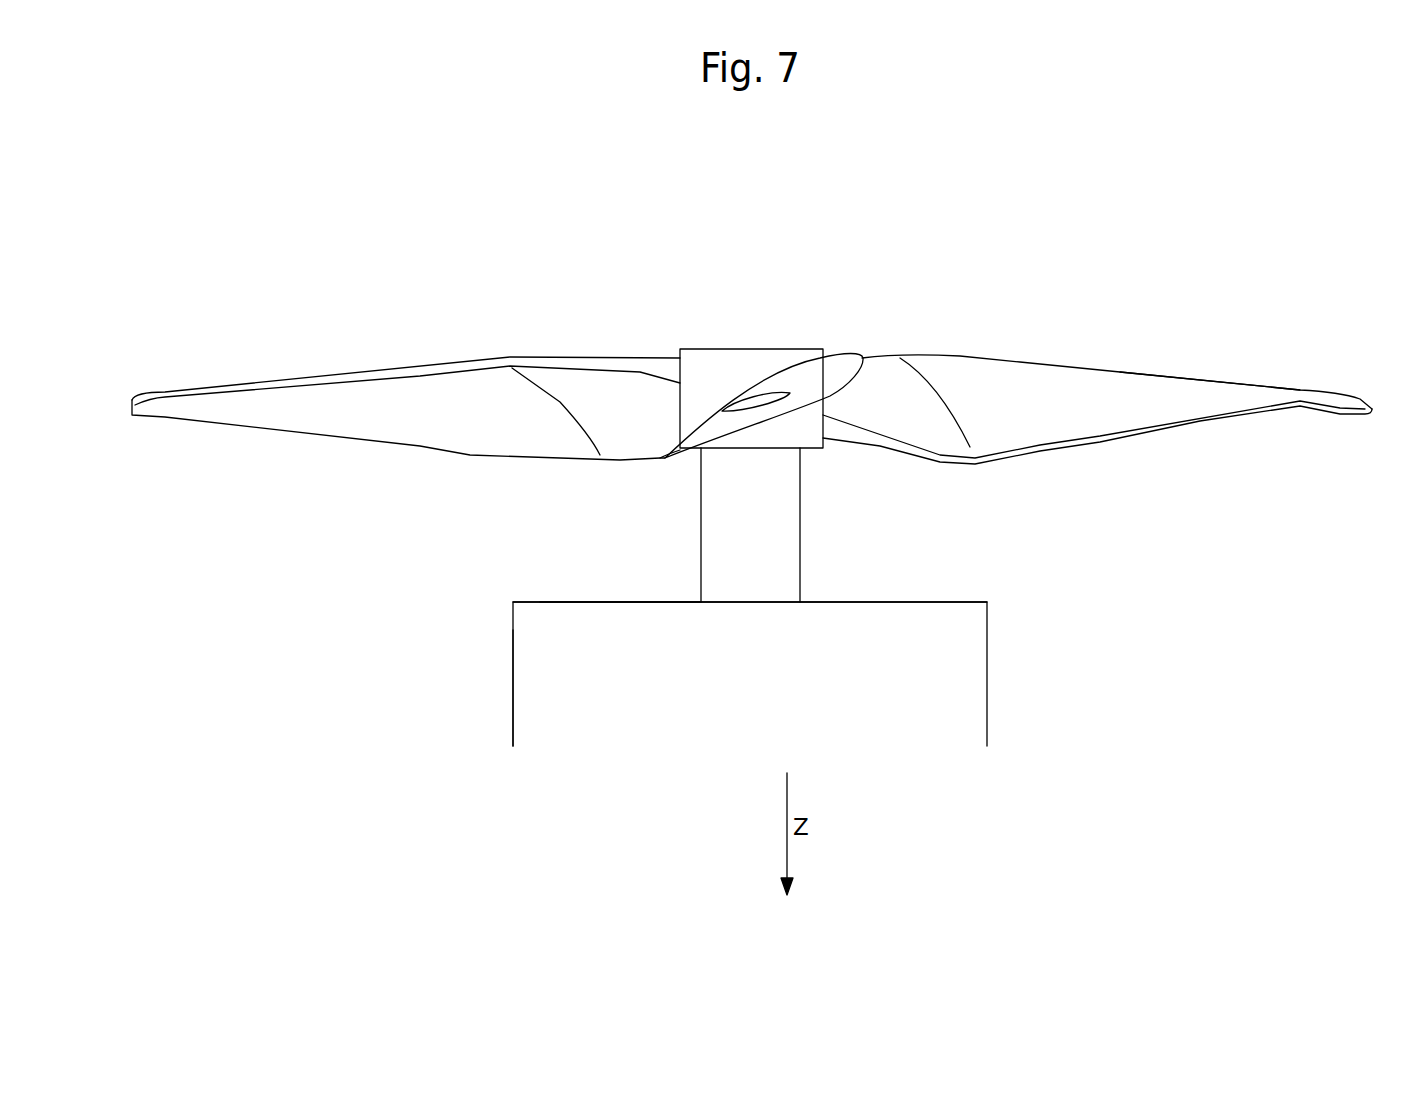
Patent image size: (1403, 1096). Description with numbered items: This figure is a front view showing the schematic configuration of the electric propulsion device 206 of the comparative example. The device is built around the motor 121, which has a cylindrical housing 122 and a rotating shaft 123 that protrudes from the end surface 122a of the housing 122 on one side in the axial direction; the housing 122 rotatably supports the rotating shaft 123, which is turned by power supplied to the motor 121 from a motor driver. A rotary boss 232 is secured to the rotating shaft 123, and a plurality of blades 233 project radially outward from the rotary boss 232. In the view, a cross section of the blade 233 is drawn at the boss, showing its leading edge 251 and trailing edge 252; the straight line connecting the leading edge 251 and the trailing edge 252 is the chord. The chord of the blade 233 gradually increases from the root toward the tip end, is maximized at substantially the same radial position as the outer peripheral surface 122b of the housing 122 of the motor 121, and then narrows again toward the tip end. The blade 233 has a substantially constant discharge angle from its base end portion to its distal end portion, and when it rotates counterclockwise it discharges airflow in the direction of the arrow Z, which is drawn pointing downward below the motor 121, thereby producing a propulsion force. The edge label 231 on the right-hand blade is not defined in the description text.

The electric propulsion device 206 is at (1030, 278).
The rotary boss 232 is at (708, 358).
The leading edge 251 is at (868, 358).
The trailing edge 252 is at (668, 453).
The blade 233 is at (1093, 380).
The blade leading edge 231 is at (1204, 375).
The rotating shaft 123 is at (775, 527).
The housing 122 is at (921, 643).
The end surface 122a is at (540, 600).
The outer peripheral surface 122b is at (513, 630).
The motor 121 is at (975, 599).